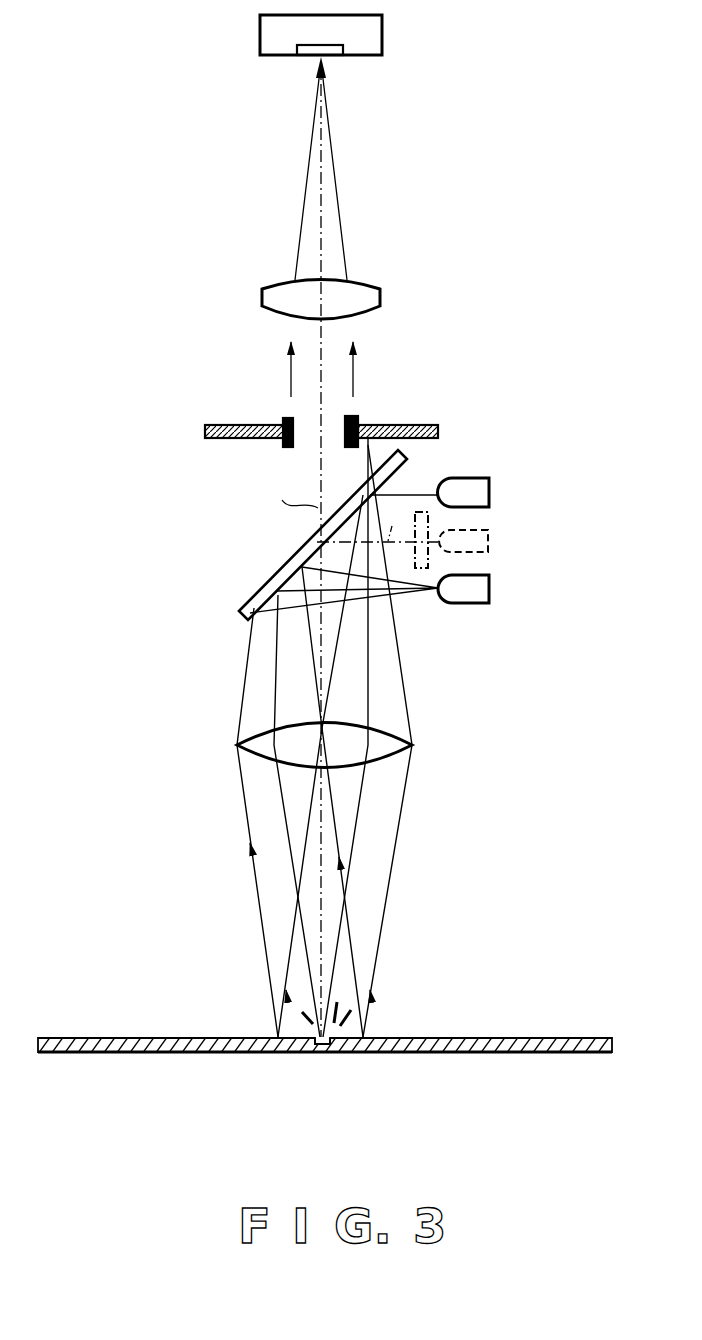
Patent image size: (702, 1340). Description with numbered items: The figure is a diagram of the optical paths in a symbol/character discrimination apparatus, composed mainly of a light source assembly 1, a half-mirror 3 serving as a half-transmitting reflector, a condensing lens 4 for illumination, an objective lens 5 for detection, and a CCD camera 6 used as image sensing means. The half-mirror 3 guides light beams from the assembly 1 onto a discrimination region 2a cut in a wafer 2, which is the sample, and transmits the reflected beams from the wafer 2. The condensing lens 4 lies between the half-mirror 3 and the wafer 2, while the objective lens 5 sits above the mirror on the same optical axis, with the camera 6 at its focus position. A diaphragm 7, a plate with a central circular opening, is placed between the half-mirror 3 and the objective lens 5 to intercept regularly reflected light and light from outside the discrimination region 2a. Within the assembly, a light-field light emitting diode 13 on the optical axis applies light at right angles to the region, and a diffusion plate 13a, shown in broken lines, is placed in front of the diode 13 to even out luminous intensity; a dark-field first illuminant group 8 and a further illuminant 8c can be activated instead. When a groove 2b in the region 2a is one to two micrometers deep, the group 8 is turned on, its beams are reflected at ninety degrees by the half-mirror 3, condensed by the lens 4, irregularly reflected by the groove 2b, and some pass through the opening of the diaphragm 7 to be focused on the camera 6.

The light source assembly 1 is at (377, 526).
The wafer 2 is at (155, 1054).
The discrimination region 2a is at (346, 1024).
The groove 2b is at (322, 1054).
The half-mirror 3 is at (255, 600).
The condensing lens 4 is at (398, 745).
The objective lens 5 is at (360, 296).
The CCD camera 6 is at (370, 30).
The diaphragm 7 is at (408, 425).
The first illuminant group 8 is at (463, 476).
The second light source 8c is at (490, 592).
The light emitting diode 13 is at (489, 549).
The diffusion plate 13a is at (428, 520).